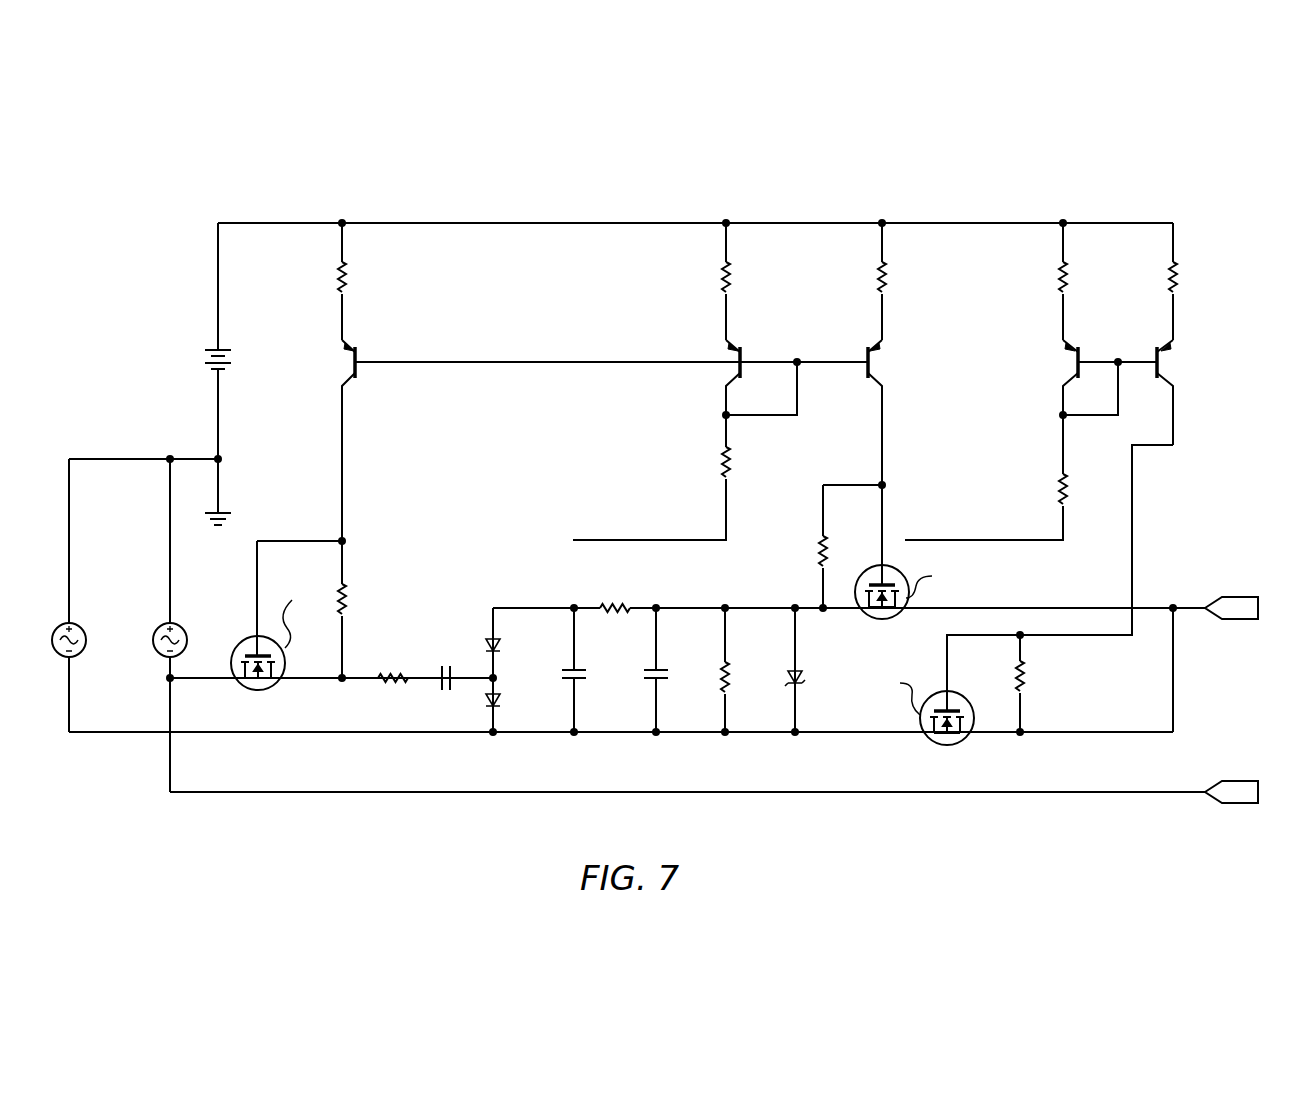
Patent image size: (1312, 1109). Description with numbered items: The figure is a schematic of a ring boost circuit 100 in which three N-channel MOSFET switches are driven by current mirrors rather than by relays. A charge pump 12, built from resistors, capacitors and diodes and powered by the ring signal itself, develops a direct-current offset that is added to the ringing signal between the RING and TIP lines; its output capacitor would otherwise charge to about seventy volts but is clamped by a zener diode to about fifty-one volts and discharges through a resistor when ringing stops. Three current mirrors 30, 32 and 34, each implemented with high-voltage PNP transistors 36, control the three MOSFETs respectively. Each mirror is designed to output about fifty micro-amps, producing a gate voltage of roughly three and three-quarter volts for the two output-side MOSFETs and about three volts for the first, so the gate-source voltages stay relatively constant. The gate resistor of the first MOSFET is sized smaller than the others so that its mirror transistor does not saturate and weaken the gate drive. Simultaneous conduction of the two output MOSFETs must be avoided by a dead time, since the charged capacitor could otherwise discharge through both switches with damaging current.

The ring detection / ring generation circuit 100 is at (192, 188).
The current mirror 30 is at (882, 213).
The current mirror 32 is at (882, 183).
The current mirror 34 is at (1175, 215).
The high-voltage PNP transistor 36 is at (350, 380).
The charge pump circuit 12 is at (508, 570).